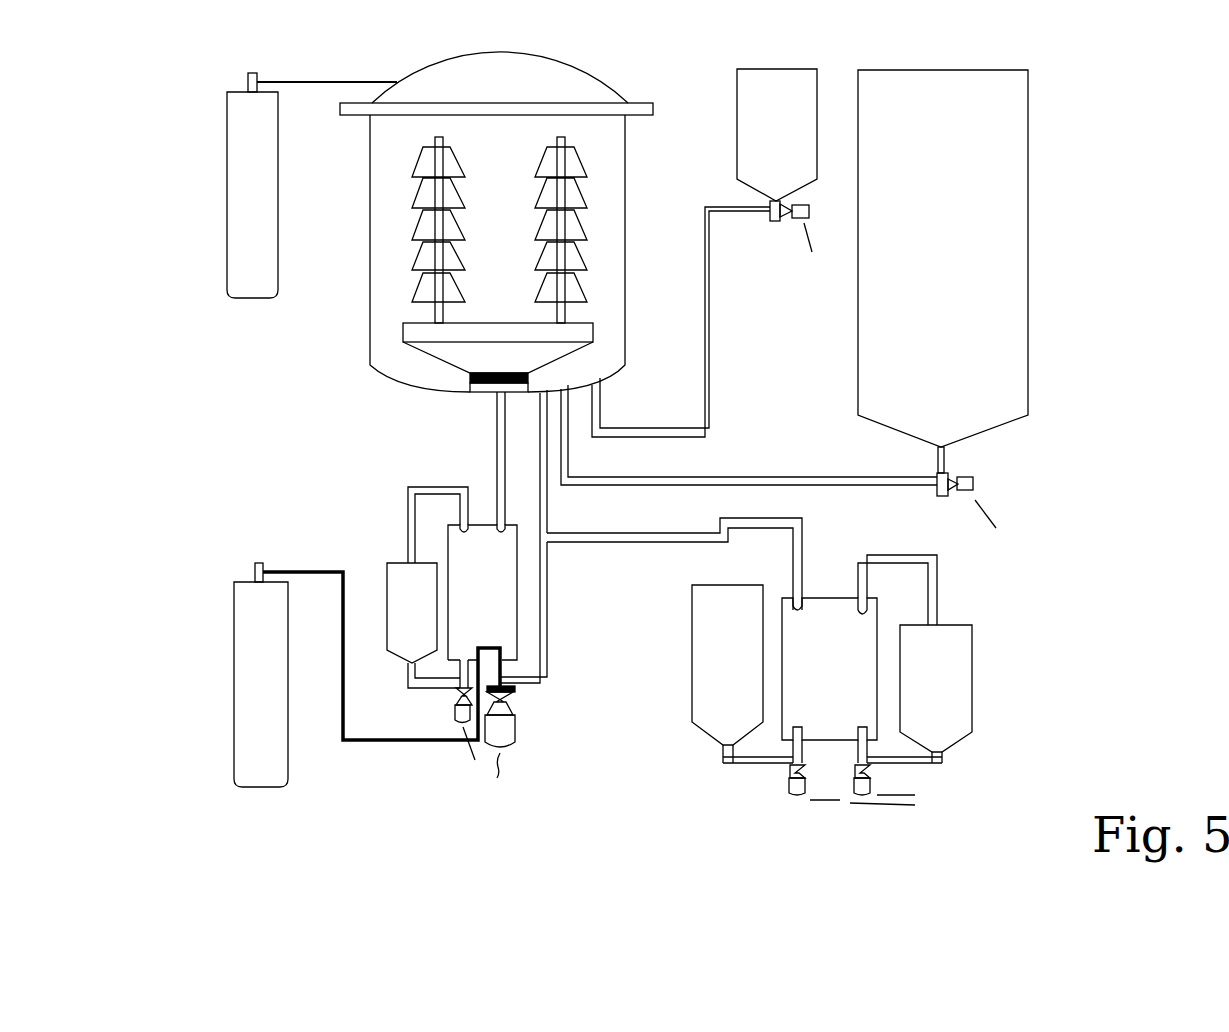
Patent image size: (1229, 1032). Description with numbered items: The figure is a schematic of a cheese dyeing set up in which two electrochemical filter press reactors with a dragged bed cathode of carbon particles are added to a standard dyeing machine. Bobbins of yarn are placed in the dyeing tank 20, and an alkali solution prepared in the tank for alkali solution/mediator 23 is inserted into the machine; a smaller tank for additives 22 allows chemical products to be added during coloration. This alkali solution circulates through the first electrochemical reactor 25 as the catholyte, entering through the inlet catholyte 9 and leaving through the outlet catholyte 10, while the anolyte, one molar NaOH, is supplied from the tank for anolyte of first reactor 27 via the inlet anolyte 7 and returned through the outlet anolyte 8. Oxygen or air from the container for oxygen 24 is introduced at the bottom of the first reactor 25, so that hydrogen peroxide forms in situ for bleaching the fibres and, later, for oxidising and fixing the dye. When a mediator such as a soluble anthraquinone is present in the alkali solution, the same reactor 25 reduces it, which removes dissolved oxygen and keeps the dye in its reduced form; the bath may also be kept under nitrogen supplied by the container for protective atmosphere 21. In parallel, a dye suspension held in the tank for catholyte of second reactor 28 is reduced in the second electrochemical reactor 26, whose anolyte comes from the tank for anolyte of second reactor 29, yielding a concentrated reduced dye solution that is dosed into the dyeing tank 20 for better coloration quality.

The inlet anolyte 7 is at (427, 685).
The outlet anolyte 8 is at (890, 558).
The inlet catholyte 9 is at (528, 682).
The outlet catholyte 10 is at (798, 582).
The dyeing tank 20 is at (390, 266).
The container for protective atmosphere 21 is at (250, 247).
The tank for additives 22 is at (760, 145).
The tank for alkali solution/mediator 23 is at (905, 326).
The container for oxygen 24 is at (245, 743).
The first electrochemical reactor 25 is at (488, 608).
The second electrochemical reactor 26 is at (815, 682).
The tank for anolyte of first reactor 27 is at (405, 595).
The tank for catholyte of second reactor, suspension of colorant 28 is at (712, 608).
The tank for anolyte of second reactor 29 is at (928, 672).